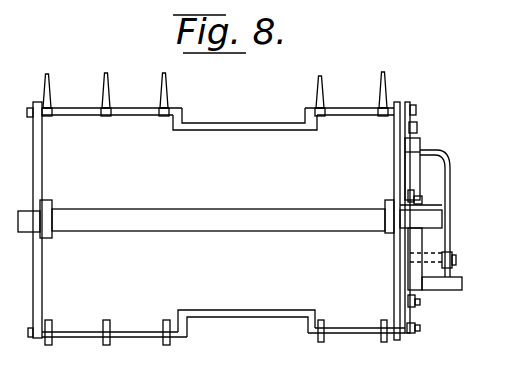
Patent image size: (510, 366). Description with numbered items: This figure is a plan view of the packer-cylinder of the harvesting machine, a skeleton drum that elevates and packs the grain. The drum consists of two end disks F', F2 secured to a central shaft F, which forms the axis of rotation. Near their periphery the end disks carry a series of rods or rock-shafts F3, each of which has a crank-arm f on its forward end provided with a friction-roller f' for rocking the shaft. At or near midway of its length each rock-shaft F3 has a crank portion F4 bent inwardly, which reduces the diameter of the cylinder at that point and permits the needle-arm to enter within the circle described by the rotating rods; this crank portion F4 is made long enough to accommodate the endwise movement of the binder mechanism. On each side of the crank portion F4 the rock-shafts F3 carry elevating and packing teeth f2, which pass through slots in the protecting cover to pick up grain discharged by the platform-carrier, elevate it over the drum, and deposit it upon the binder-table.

The central shaft F is at (230, 210).
The end disk F' is at (376, 221).
The end disk F2 is at (72, 163).
The rock-shaft F3 is at (364, 309).
The crank portion F4 is at (204, 317).
The crank-arm f is at (431, 209).
The friction-roller f' is at (423, 125).
The elevating and packing teeth f2 is at (224, 216).